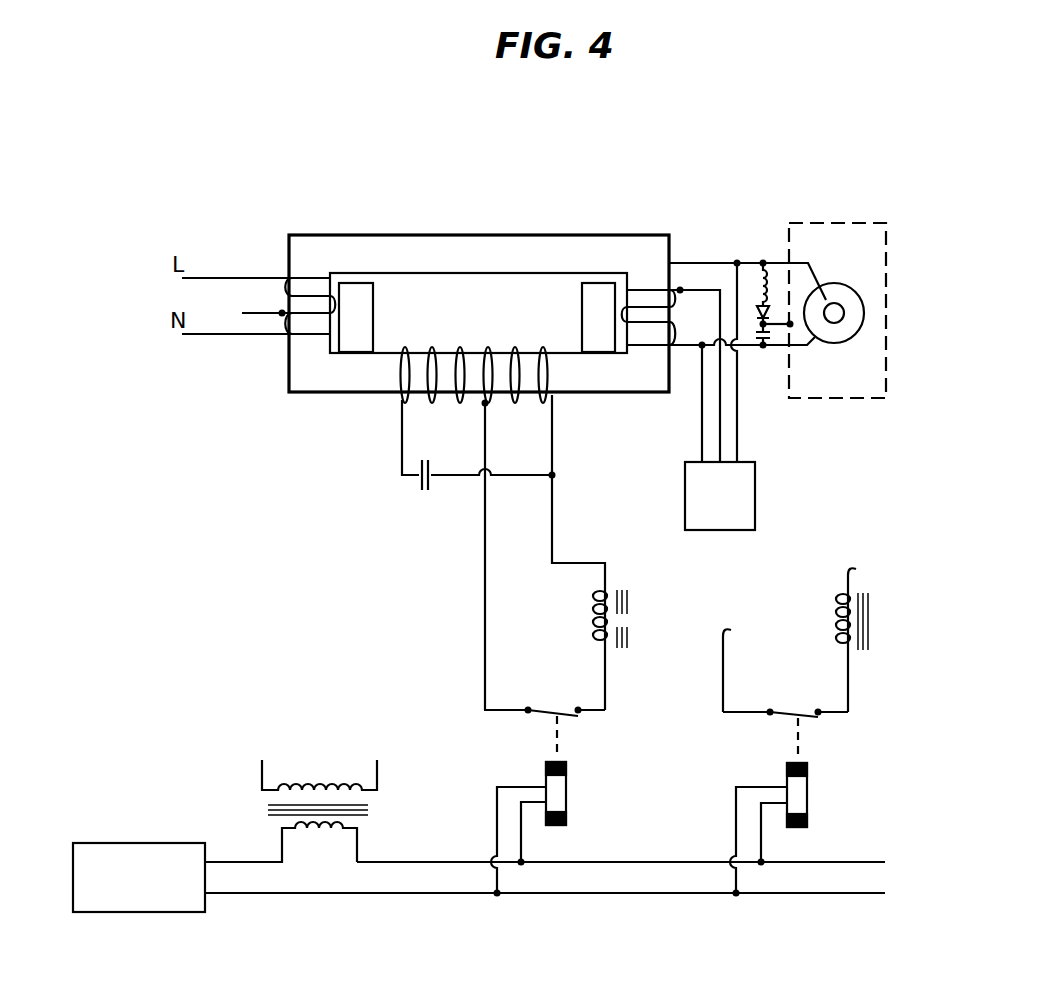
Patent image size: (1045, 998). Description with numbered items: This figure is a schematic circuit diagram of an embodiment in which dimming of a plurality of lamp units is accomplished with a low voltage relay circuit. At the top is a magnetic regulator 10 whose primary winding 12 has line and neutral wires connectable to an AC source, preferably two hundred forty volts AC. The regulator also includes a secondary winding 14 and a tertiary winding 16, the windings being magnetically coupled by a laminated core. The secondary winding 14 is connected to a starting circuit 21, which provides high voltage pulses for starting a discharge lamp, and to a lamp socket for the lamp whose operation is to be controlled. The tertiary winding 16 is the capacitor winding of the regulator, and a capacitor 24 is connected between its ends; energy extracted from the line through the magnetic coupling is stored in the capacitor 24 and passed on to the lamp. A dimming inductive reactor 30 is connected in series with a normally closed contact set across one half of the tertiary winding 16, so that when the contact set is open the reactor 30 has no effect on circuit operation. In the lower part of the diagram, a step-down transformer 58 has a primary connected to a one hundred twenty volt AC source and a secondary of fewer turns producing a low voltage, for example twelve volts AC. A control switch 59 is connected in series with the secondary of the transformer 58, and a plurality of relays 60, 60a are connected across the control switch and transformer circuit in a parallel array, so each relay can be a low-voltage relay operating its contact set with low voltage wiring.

The magnetic regulator 10 is at (512, 216).
The primary winding 12 is at (310, 277).
The secondary winding 14 is at (648, 288).
The tertiary winding 16 is at (520, 348).
The starting circuit 21 is at (755, 487).
The capacitor 24 is at (415, 477).
The dimming inductive reactor 30 is at (656, 616).
The step-down transformer 58 is at (273, 850).
The control switch 59 is at (175, 833).
The relay 60 is at (592, 796).
The relay 60a is at (832, 797).